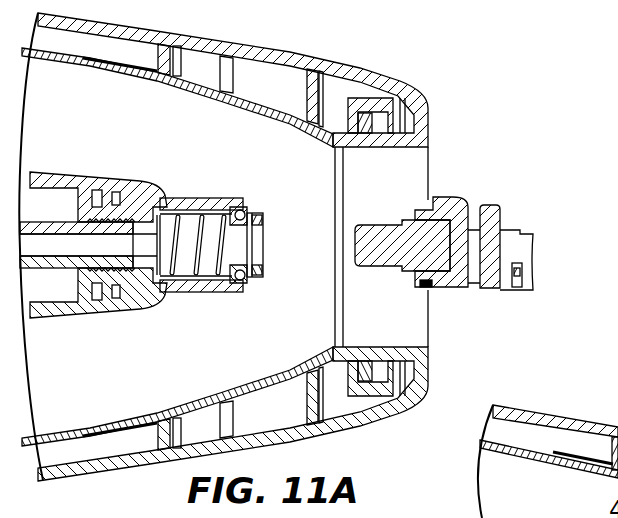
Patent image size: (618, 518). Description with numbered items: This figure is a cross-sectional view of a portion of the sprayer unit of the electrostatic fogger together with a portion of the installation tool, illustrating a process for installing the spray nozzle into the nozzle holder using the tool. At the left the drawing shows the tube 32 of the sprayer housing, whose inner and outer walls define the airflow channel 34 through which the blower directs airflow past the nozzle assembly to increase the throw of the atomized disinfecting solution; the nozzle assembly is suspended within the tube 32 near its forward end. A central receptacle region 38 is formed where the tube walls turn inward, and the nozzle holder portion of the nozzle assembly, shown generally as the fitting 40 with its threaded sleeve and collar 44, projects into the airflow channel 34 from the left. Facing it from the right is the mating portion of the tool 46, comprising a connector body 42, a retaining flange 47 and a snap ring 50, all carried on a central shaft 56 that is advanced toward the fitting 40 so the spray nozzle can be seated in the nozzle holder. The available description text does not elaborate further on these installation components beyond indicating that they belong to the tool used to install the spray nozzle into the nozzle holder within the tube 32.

The tube 32 is at (253, 47).
The airflow channel 34 is at (200, 350).
The receptacle housing 38 is at (430, 311).
The fitting assembly 40 is at (143, 230).
The connector body 42 is at (367, 270).
The collar sleeve 44 is at (213, 292).
The mating connector assembly 46 is at (480, 254).
The retaining flange 47 is at (490, 205).
The snap ring 50 is at (512, 208).
The plug shaft 56 is at (438, 241).